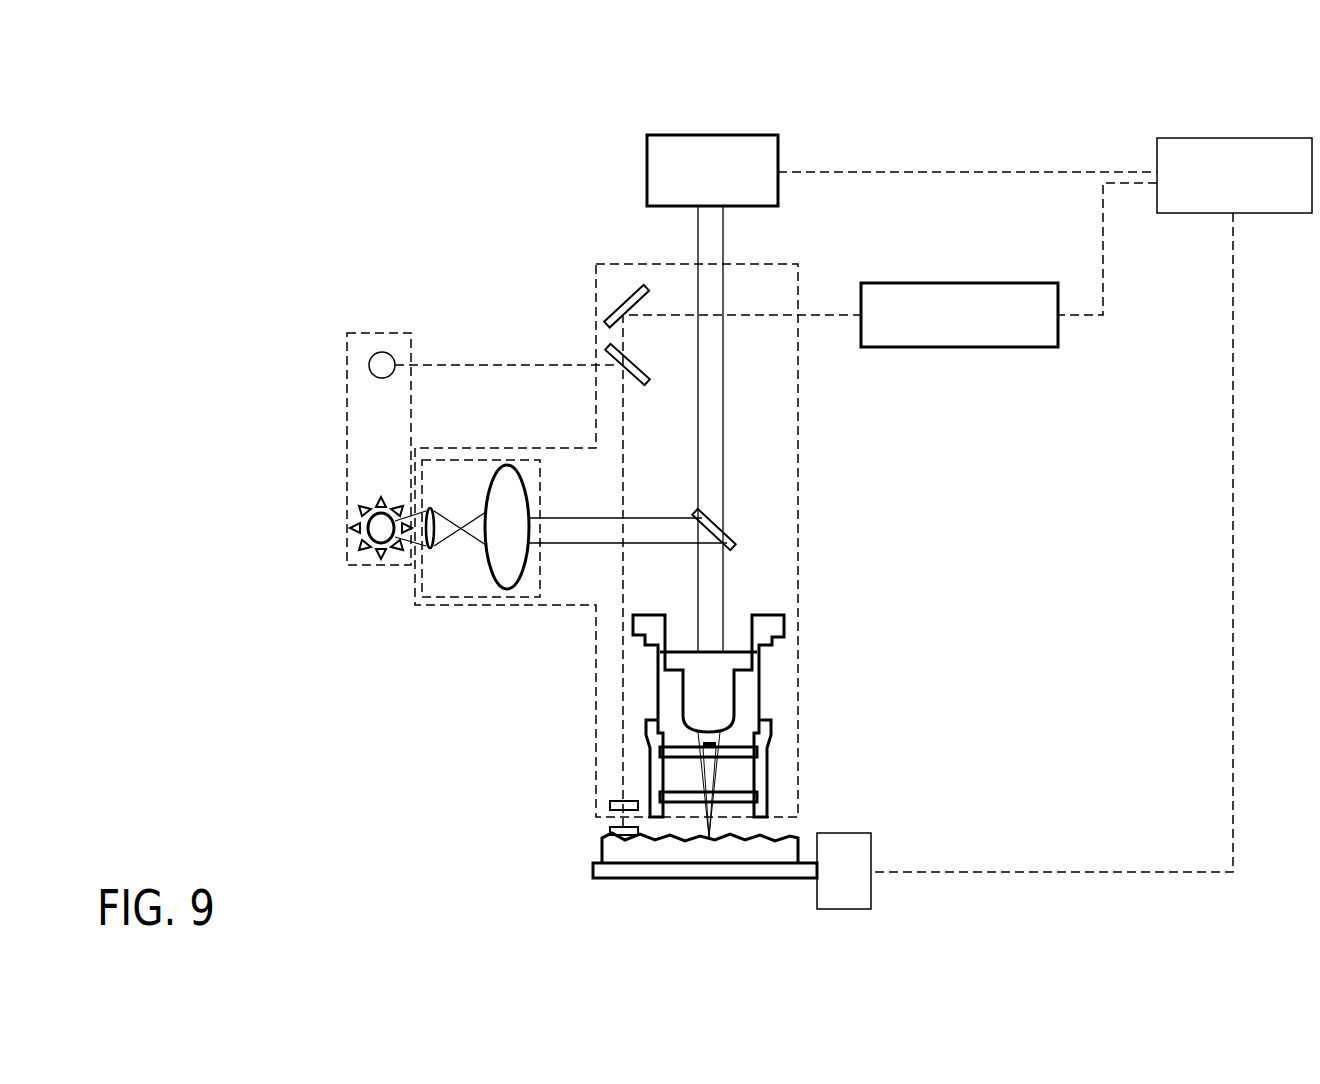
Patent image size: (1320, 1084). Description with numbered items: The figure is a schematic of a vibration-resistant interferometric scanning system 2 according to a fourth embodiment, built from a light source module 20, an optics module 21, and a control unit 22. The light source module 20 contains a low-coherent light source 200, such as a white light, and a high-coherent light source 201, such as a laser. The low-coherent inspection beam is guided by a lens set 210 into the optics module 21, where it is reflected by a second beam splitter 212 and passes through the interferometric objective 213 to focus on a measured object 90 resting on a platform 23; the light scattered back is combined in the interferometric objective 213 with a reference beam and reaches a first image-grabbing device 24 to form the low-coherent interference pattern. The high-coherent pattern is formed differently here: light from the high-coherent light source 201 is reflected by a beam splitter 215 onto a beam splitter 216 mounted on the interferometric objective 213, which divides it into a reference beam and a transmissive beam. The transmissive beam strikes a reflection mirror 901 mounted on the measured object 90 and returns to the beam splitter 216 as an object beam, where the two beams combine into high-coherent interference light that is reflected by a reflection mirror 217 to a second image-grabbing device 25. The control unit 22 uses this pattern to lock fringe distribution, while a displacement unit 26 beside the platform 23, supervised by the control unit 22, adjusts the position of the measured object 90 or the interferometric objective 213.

The vibration-resistant interferometric scanning system 2 is at (401, 154).
The light source module 20 is at (278, 458).
The low-coherent light source 200 is at (377, 510).
The high-coherent light source 201 is at (369, 365).
The optics module 21 is at (603, 240).
The lens set 210 is at (452, 605).
The second beam splitter 212 is at (725, 552).
The interferometric objective 213 is at (782, 670).
The beam splitter 215 is at (610, 350).
The beam splitter 216 is at (612, 800).
The reflection mirror 217 is at (608, 320).
The control unit 22 is at (1250, 189).
The platform 23 is at (598, 878).
The first image-grabbing device 24 is at (728, 184).
The second image-grabbing device 25 is at (976, 329).
The displacement unit 26 is at (860, 885).
The measured object 90 is at (627, 857).
The reflection mirror 901 is at (610, 828).